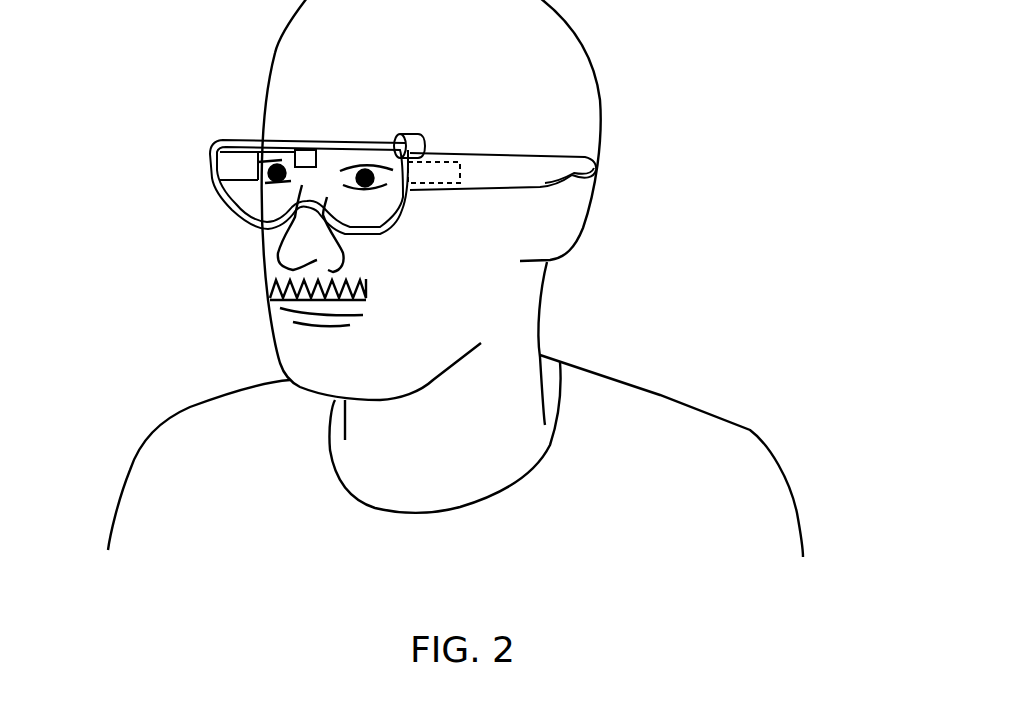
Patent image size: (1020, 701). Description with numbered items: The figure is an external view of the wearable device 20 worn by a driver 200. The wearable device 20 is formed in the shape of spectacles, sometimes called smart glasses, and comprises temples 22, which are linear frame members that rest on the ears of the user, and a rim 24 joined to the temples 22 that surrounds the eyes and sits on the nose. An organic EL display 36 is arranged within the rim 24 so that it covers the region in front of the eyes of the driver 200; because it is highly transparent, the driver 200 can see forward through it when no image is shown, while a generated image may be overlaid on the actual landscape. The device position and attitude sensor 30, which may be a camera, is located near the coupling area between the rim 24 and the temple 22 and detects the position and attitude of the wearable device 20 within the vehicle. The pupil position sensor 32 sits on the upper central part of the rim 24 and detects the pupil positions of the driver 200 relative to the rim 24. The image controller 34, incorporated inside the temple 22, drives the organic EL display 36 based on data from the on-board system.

The wearable device 20 is at (376, 161).
The temples 22 is at (540, 155).
The rim 24 is at (220, 203).
The device position and attitude sensor 30 is at (425, 143).
The pupil position sensor 32 is at (285, 162).
The image controller 34 is at (460, 167).
The organic EL display 36 is at (248, 210).
The driver 200 is at (657, 395).